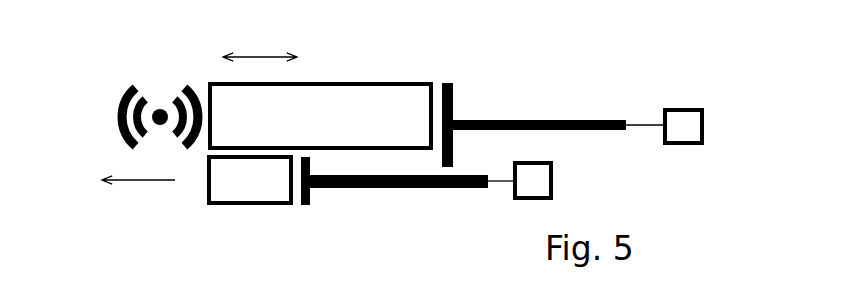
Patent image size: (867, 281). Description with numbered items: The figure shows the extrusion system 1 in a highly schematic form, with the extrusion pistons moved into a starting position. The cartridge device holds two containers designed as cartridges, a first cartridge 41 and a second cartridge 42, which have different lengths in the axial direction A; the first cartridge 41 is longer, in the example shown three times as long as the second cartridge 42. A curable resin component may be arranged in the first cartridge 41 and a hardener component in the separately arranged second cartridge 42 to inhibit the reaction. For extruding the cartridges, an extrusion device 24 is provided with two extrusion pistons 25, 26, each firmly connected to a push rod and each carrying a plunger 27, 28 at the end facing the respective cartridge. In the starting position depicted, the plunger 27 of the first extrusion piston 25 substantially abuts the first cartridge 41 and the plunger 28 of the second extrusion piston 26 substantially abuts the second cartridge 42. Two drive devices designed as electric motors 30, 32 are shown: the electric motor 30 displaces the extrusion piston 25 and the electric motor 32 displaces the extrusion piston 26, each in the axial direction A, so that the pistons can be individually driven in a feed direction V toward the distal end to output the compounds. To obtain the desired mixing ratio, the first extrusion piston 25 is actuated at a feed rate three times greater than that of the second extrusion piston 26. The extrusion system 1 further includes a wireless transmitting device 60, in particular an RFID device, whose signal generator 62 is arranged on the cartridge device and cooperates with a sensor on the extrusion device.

The extrusion system 1 is at (479, 58).
The extrusion device 24 is at (527, 116).
The first extrusion piston 25 is at (555, 120).
The second extrusion piston 26 is at (398, 188).
The plunger 27 is at (454, 92).
The plunger 28 is at (310, 197).
The electric motor 30 is at (704, 120).
The electric motor 32 is at (555, 185).
The first cartridge 41 is at (288, 82).
The second cartridge 42 is at (247, 205).
The transmitting device 60 is at (126, 96).
The signal generator 62 is at (120, 133).
The axial direction A is at (250, 55).
The feed direction V is at (127, 180).